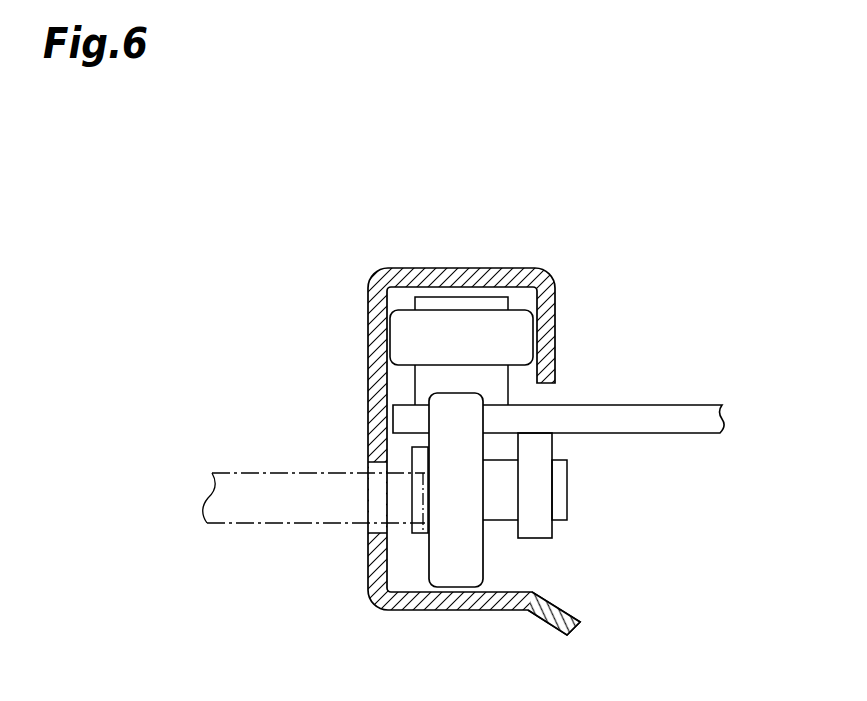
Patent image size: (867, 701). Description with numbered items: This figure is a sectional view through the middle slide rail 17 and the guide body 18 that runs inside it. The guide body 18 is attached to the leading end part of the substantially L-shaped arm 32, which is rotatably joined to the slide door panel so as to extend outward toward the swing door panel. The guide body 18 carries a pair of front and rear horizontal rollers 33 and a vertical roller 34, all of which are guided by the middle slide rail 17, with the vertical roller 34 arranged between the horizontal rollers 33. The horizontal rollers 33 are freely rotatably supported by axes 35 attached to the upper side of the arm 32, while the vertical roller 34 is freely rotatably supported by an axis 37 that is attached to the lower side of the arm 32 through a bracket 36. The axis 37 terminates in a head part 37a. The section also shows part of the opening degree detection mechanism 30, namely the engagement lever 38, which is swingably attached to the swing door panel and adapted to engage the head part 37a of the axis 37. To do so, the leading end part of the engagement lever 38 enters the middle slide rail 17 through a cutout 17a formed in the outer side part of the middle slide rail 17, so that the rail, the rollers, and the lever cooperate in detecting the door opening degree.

The middle slide rail 17 is at (467, 275).
The cutout 17a is at (372, 470).
The guide body 18 is at (401, 290).
The opening degree detection mechanism 30 is at (406, 548).
The arm 32 is at (652, 417).
The horizontal rollers 33 is at (505, 332).
The vertical roller 34 is at (455, 570).
The axes 35 is at (427, 377).
The bracket 36 is at (538, 492).
The axis 37 is at (500, 510).
The head part 37a is at (418, 457).
The engagement lever 38 is at (297, 527).